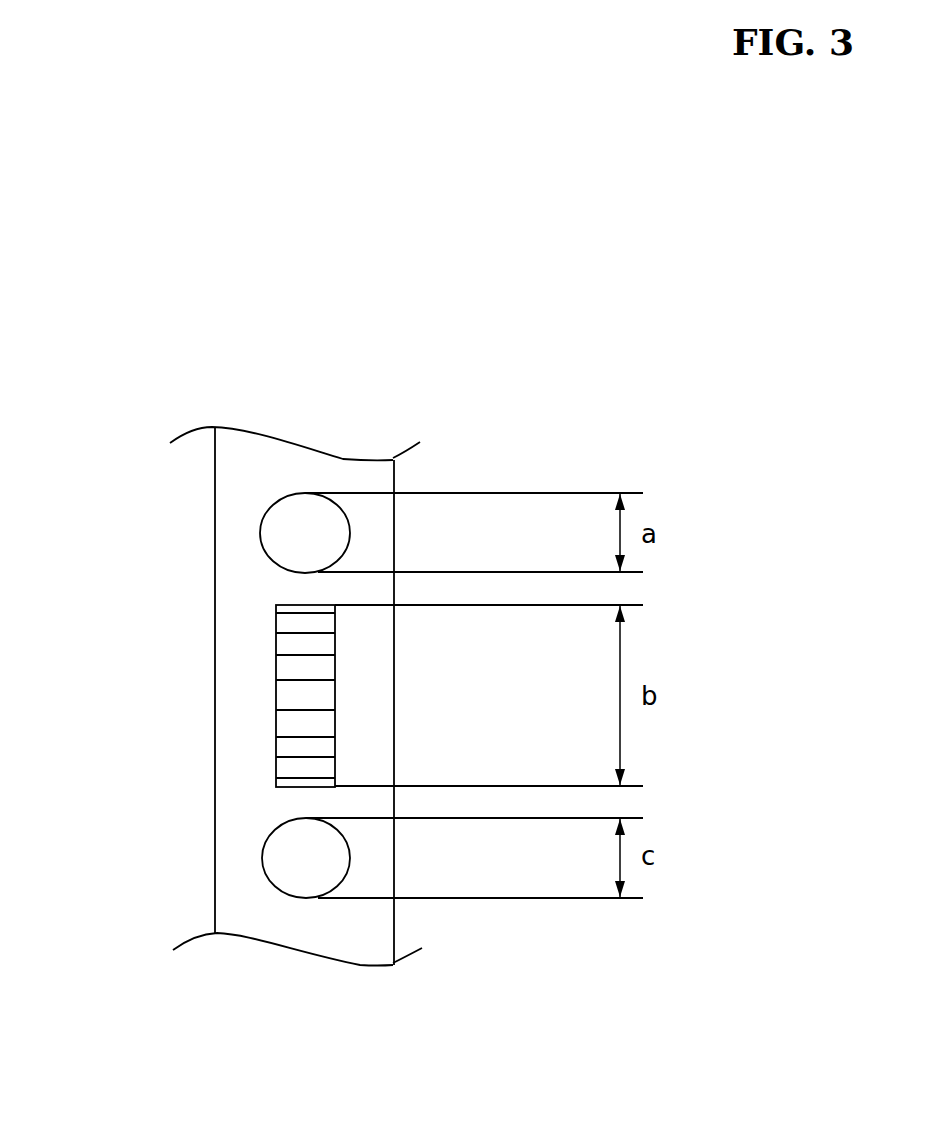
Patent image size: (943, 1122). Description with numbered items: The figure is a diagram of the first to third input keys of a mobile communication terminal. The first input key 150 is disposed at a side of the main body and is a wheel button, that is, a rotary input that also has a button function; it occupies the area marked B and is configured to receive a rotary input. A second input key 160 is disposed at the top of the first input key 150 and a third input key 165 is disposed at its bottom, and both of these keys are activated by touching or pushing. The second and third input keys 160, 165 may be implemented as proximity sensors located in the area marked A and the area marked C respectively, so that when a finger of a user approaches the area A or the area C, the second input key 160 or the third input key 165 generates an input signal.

The second input key 160 is at (308, 520).
The first input key 150 is at (307, 700).
The third input key 165 is at (298, 862).